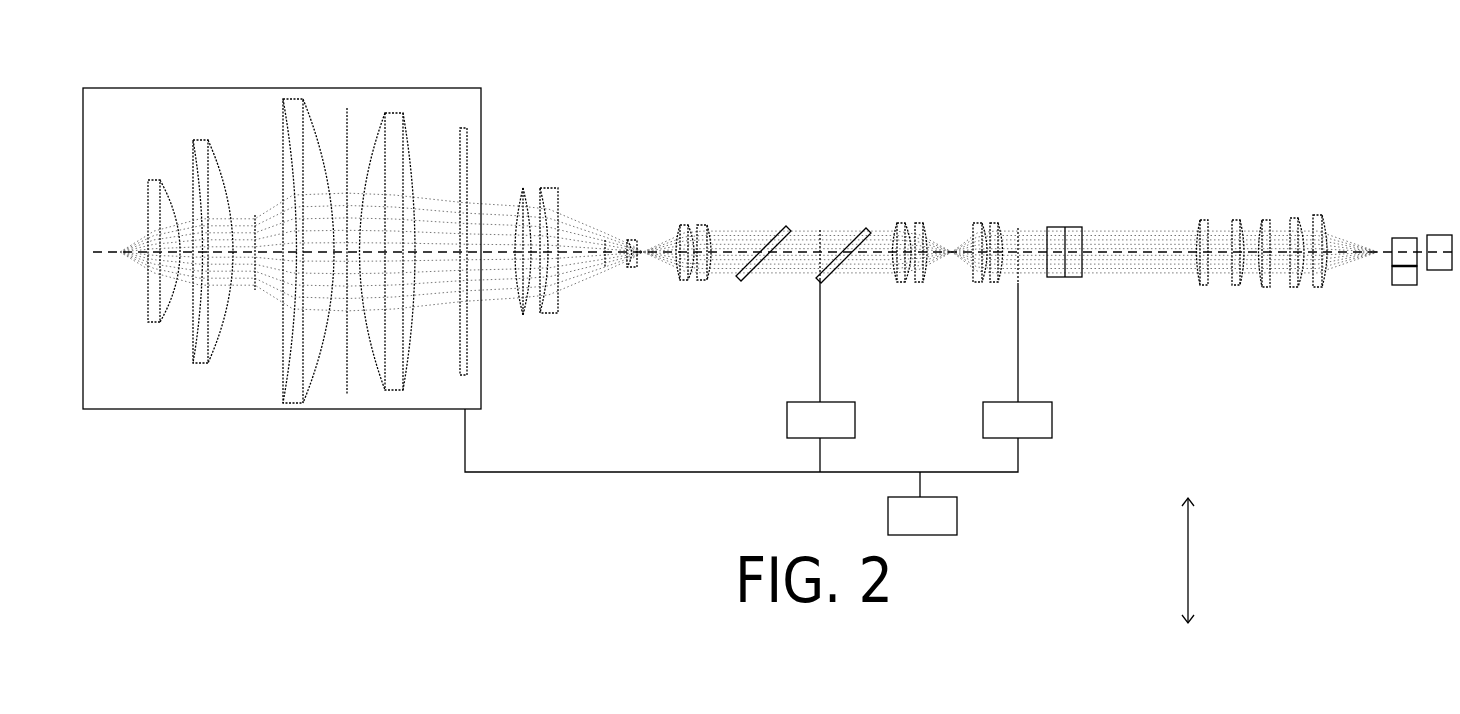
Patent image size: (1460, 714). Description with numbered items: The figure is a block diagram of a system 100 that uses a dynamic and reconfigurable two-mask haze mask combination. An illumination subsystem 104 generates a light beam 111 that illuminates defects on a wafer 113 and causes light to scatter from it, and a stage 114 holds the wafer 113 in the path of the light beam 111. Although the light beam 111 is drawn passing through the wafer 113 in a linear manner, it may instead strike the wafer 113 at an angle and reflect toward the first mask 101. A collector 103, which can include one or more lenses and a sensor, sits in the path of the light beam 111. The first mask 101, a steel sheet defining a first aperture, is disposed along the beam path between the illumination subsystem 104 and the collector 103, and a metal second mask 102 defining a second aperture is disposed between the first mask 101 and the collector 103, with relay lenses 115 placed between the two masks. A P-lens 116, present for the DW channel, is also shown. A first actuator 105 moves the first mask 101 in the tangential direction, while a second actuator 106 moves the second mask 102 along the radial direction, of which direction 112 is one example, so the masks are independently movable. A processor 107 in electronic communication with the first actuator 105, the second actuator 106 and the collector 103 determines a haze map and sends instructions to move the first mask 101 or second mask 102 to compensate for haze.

The system 100 is at (637, 112).
The first mask 101 is at (1018, 209).
The second mask 102 is at (851, 289).
The collector 103 is at (413, 412).
The illumination subsystem 104 is at (1434, 270).
The first actuator 105 is at (1017, 420).
The second actuator 106 is at (821, 334).
The processor 107 is at (922, 503).
The light beam 111 is at (1140, 222).
The direction 112 is at (1206, 560).
The wafer 113 is at (1405, 238).
The stage 114 is at (1393, 285).
The relay lenses 115 is at (945, 208).
The P-lens 116 is at (530, 172).